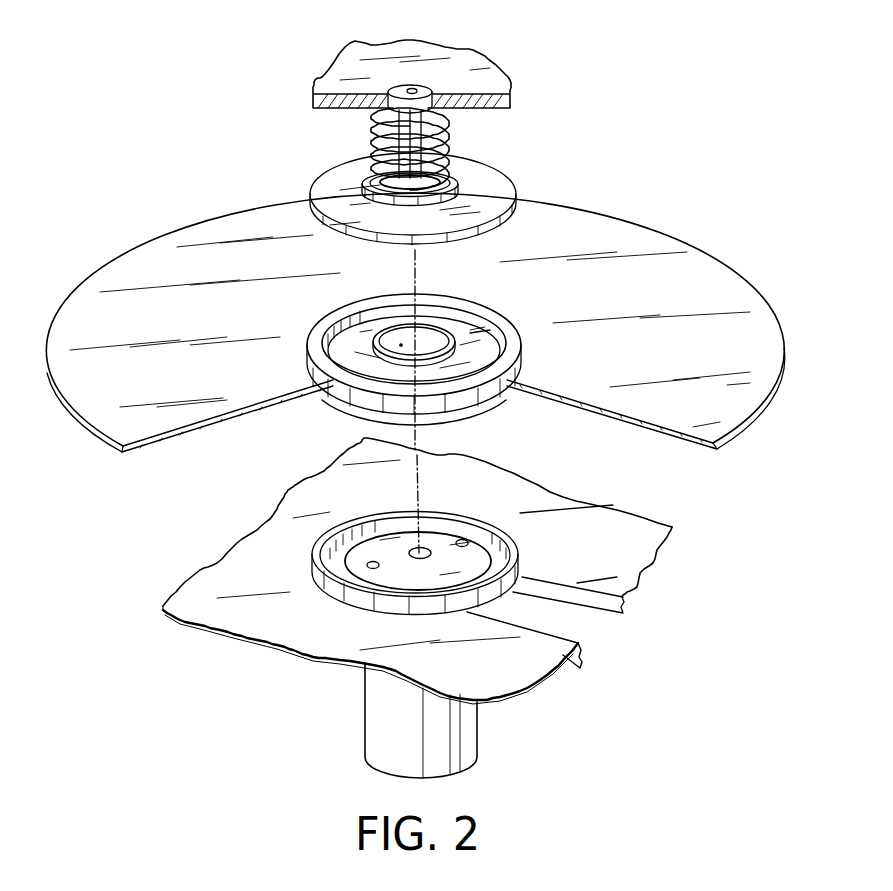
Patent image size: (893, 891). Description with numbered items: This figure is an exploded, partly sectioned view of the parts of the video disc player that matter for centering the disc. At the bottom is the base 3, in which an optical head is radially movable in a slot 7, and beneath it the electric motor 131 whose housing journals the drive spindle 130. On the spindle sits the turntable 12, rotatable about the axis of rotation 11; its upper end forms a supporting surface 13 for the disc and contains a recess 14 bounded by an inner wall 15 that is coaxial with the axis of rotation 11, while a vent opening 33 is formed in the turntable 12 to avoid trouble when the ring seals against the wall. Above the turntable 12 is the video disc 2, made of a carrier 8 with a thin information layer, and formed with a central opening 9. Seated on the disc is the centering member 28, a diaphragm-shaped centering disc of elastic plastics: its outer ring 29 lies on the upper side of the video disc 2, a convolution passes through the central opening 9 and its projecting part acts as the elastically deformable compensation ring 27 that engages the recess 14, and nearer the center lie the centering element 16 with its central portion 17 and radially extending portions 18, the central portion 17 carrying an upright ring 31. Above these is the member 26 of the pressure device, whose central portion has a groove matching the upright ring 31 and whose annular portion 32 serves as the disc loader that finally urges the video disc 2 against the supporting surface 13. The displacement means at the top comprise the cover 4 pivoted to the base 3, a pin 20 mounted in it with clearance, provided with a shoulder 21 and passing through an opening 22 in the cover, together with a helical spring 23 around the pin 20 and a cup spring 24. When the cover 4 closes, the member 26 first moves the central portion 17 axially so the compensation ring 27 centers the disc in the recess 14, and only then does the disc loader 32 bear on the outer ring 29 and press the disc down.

The video disc 2 is at (612, 203).
The base 3 is at (498, 675).
The cover 4 is at (478, 62).
The slot 7 is at (560, 623).
The carrier 8 is at (657, 420).
The central opening 9 is at (525, 345).
The axis of rotation 11 is at (422, 423).
The turntable 12 is at (497, 590).
The supporting surface 13 is at (520, 545).
The recess 14 is at (335, 567).
The inner wall 15 is at (447, 520).
The centering element 16 is at (451, 327).
The central portion 17 is at (401, 345).
The radially extending portions 18 is at (322, 347).
The pin 20 is at (448, 132).
The shoulder 21 is at (412, 90).
The opening 22 is at (370, 105).
The helical spring 23 is at (377, 141).
The cup spring 24 is at (455, 184).
The member of the pressure device 26 is at (486, 194).
The elastically deformable compensation ring 27 is at (343, 398).
The centering member (centering disc) 28 is at (510, 301).
The outer ring 29 is at (337, 323).
The upright ring 31 is at (488, 331).
The annular portion (information disc loader) 32 is at (312, 192).
The vent opening 33 is at (463, 540).
The drive spindle 130 is at (415, 551).
The electric motor 131 is at (363, 712).